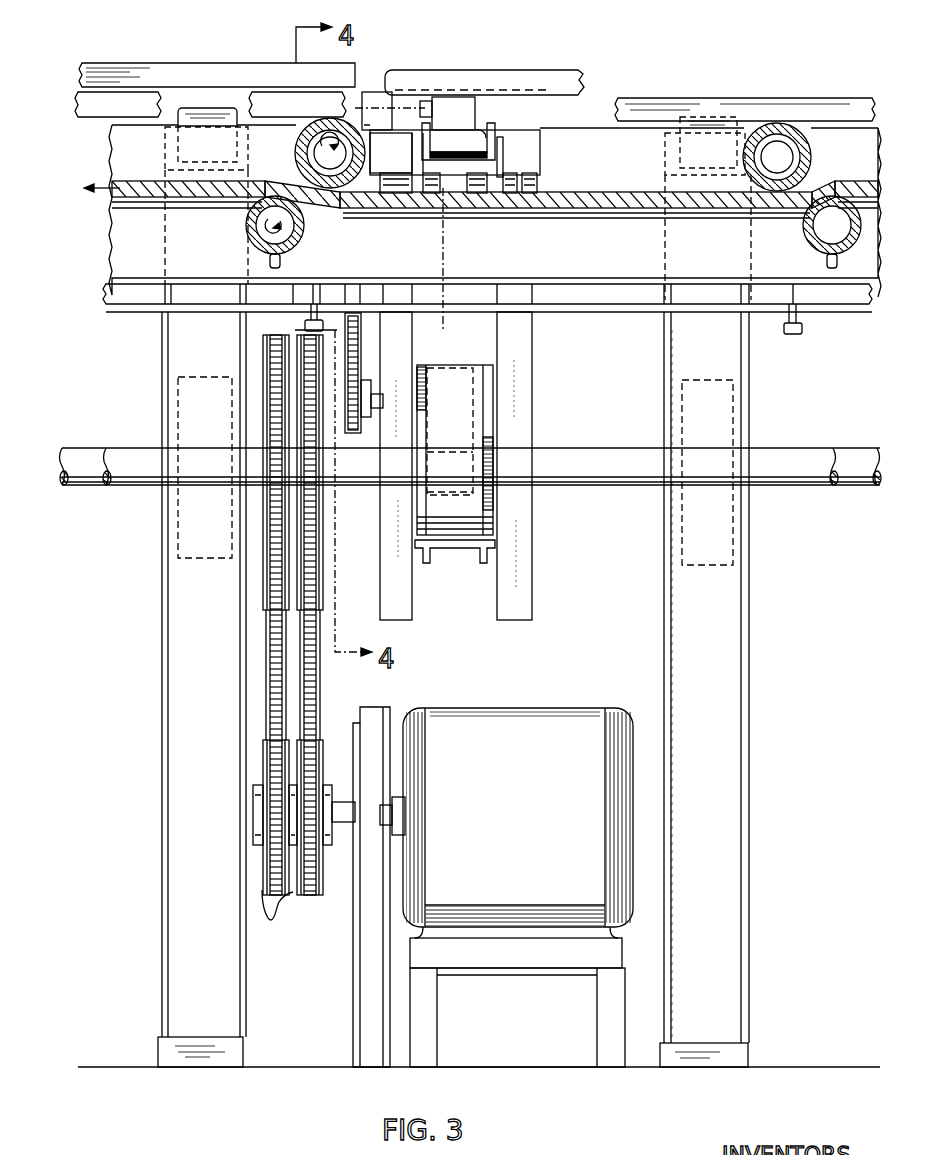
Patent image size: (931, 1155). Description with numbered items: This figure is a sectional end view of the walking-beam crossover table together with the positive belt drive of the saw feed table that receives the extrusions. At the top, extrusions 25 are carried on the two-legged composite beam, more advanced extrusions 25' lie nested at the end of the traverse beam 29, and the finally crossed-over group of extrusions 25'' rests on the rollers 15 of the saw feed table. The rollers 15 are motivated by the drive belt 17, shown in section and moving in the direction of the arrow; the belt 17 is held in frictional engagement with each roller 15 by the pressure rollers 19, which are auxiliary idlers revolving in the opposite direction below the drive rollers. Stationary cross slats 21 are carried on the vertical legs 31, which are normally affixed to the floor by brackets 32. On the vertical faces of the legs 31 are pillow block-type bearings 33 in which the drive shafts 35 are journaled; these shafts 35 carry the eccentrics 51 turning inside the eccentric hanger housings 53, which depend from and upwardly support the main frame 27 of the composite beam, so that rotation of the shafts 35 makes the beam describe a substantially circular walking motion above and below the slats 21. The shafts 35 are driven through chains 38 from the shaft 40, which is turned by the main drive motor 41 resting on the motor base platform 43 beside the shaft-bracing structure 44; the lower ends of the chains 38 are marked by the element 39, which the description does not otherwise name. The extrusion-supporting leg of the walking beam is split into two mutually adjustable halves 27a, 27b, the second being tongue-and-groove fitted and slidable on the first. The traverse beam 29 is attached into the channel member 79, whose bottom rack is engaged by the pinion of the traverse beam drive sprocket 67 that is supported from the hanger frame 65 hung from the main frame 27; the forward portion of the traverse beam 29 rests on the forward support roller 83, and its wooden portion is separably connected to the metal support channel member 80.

The rollers 15 is at (294, 165).
The drive belt 17 is at (592, 206).
The pressure rollers 19 is at (304, 226).
The stationary cross slats 21 is at (198, 114).
The extrusions 25 is at (217, 61).
The extrusions 25' is at (484, 68).
The extrusions 25'' is at (459, 118).
The main frame 27 is at (412, 164).
The beam half 27a is at (372, 96).
The beam half 27b is at (416, 98).
The traverse beam 29 is at (468, 106).
The vertical legs 31 is at (180, 876).
The brackets 32 is at (159, 1053).
The pillow block-type bearings 33 is at (200, 378).
The drive shaft 35 is at (86, 458).
The chains 38 is at (268, 650).
The chain loop 39 is at (274, 919).
The shaft 40 is at (345, 799).
The main drive motor 41 is at (538, 718).
The motor base platform 43 is at (560, 993).
The shaft-bracing structure 44 is at (348, 957).
The eccentrics 51 is at (470, 400).
The eccentric hanger housing 53 is at (493, 520).
The hanger frame 65 is at (529, 357).
The traverse beam drive sprocket 67 is at (444, 188).
The channel member 79 is at (482, 142).
The metal support channel member 80 is at (174, 155).
The forward support roller 83 is at (517, 157).